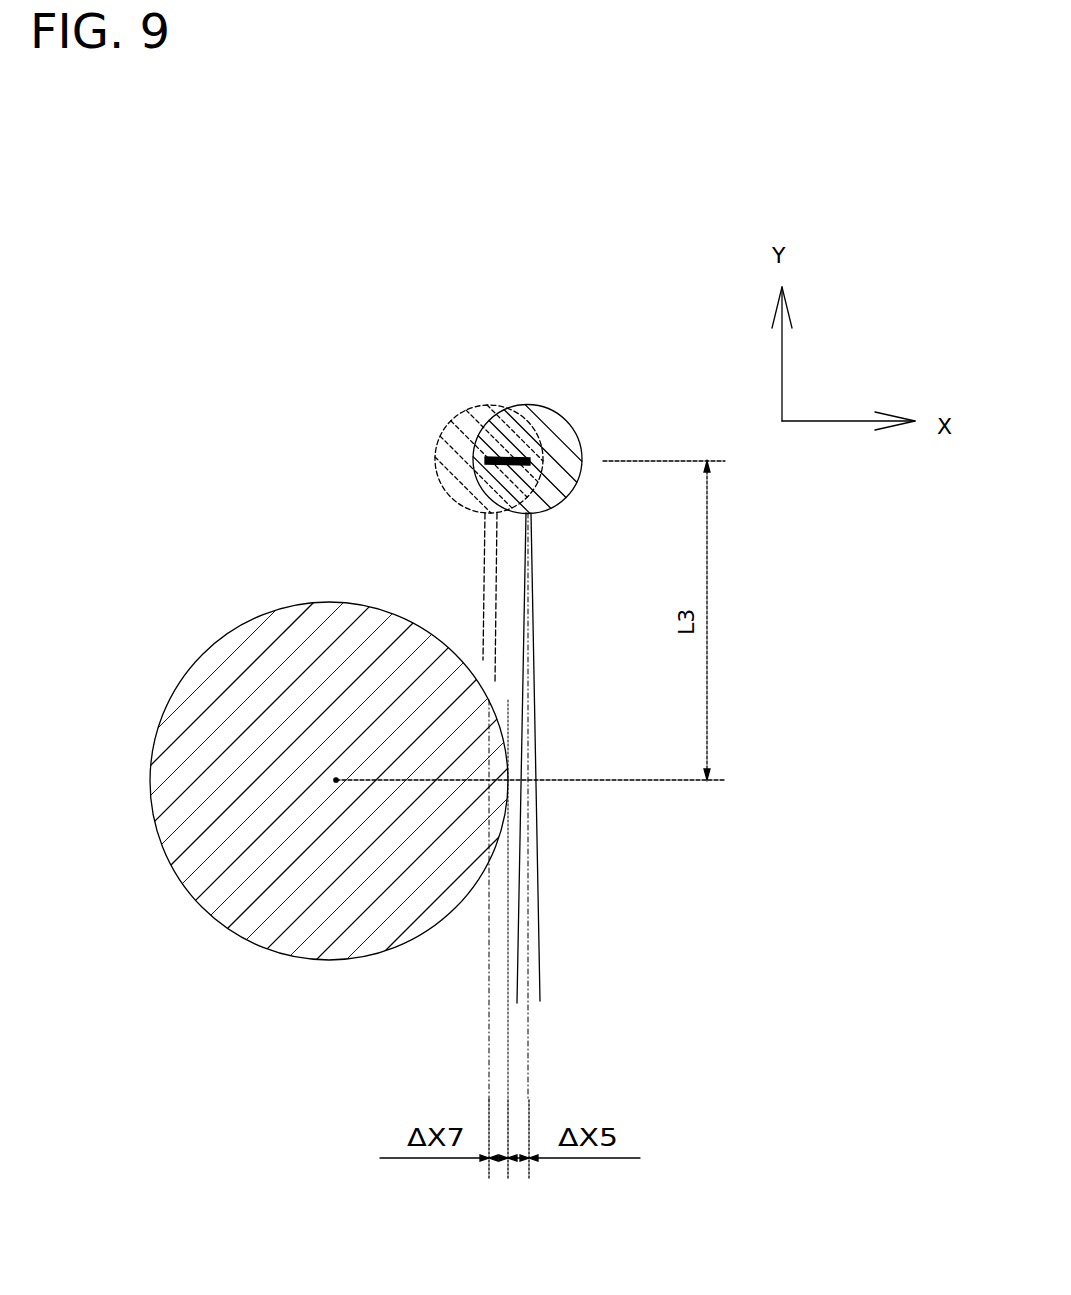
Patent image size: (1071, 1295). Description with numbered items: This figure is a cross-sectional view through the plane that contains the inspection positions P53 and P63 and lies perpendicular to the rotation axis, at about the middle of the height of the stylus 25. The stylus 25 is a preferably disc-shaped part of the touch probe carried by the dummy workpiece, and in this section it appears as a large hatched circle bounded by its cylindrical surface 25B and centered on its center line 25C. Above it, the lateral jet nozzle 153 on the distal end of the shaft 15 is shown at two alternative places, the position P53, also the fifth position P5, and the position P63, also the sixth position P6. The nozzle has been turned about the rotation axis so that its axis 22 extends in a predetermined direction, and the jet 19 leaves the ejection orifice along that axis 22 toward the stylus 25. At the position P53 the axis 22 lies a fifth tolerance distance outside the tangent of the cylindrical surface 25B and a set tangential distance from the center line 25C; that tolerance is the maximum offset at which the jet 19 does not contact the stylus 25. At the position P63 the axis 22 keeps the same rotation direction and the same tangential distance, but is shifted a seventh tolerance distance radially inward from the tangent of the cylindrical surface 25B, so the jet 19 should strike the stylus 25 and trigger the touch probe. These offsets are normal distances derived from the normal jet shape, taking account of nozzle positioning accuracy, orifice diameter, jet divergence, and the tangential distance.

The shaft 15 is at (555, 421).
The lateral jet nozzle 153 is at (527, 404).
The fifth position P5 is at (578, 413).
The position P53 is at (537, 451).
The sixth position P6 is at (446, 437).
The position P63 is at (487, 458).
The stylus 25 is at (269, 750).
The cylindrical surface 25B is at (274, 606).
The center line 25C is at (336, 779).
The jet 19 is at (541, 908).
The axis 22 is at (531, 1015).